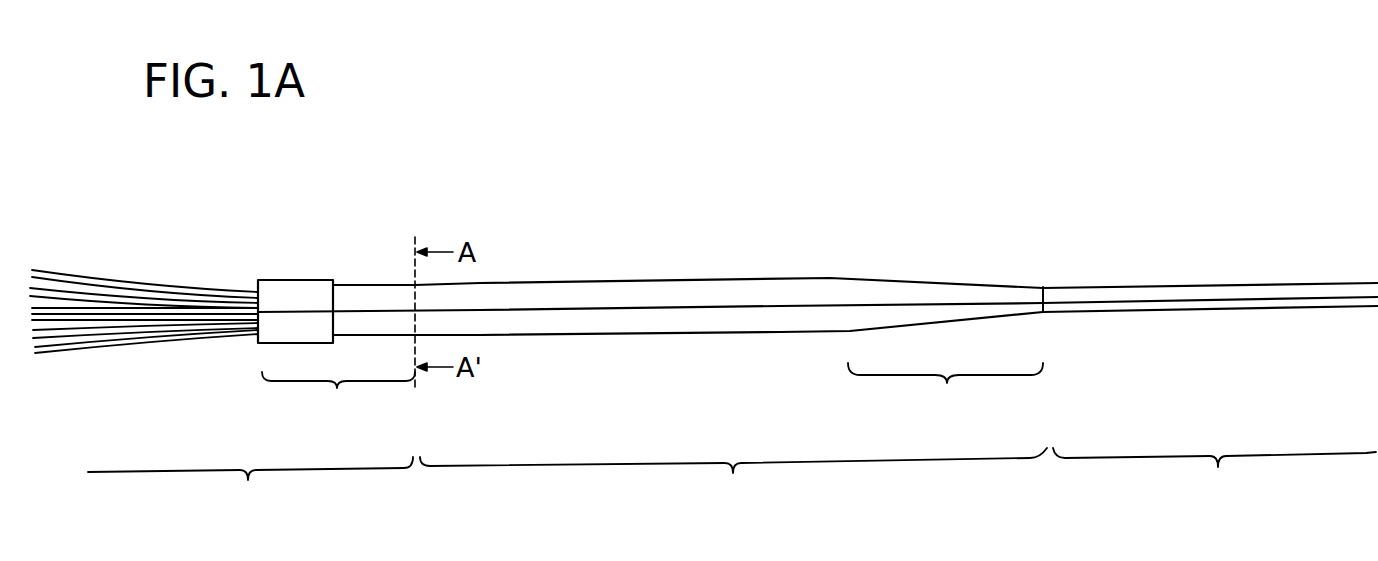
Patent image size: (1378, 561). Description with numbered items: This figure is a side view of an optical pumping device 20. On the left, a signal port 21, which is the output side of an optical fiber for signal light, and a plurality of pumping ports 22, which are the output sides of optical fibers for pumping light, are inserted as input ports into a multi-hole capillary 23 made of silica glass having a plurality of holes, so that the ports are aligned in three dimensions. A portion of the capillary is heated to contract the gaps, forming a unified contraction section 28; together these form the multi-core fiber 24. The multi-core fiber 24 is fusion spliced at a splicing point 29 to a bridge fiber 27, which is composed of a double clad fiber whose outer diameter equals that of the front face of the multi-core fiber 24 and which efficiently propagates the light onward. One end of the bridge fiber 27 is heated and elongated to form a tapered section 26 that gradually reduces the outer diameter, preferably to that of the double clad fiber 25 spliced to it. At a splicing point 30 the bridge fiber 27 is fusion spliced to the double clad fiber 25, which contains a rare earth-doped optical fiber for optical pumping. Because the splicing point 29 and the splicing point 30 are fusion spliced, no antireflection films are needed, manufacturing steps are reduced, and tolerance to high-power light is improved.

The optical pumping device 20 is at (930, 218).
The signal port 21 is at (50, 327).
The pumping ports 22 is at (72, 299).
The multi-hole capillary 23 is at (338, 403).
The multi-core fiber 24 is at (250, 490).
The double clad fiber 25 is at (1214, 478).
The tapered section 26 is at (945, 395).
The bridge fiber 27 is at (733, 482).
The contraction section 28 is at (355, 283).
The splicing point 29 is at (415, 297).
The splicing point 30 is at (1046, 291).